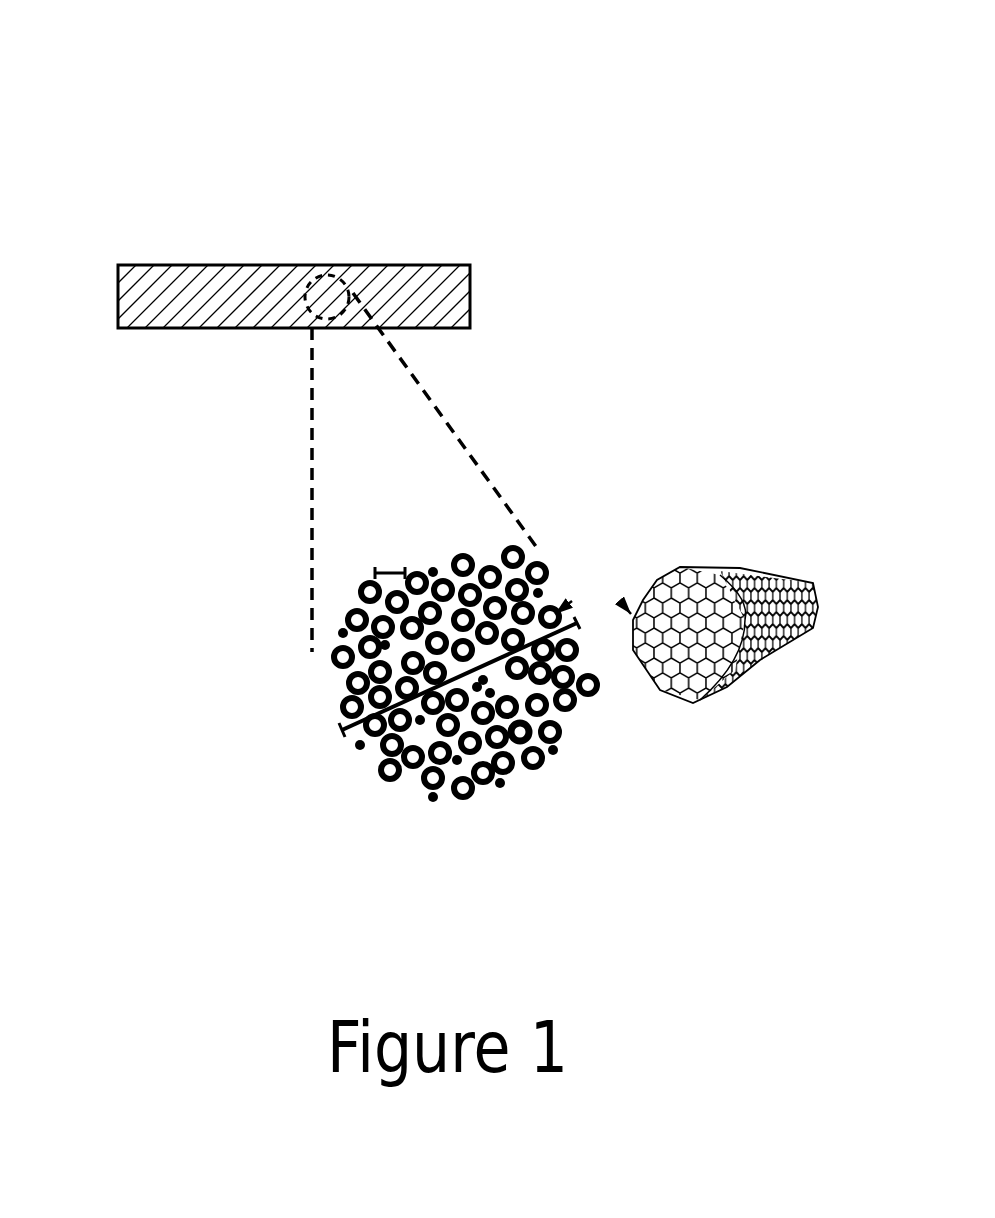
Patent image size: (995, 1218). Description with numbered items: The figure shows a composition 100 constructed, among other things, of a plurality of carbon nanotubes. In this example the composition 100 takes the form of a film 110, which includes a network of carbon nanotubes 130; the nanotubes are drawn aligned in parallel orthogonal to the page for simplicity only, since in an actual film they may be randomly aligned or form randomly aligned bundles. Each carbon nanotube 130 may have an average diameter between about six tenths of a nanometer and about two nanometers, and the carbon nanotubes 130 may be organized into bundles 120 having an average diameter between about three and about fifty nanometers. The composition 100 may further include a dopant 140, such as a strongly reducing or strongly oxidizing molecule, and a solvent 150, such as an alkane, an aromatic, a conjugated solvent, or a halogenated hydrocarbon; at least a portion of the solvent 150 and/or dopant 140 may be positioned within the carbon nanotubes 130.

The composition 100 is at (652, 203).
The film 110 is at (232, 291).
The bundle of carbon nanotubes 120 is at (316, 729).
The carbon nanotube 130 is at (723, 567).
The dopant 140 is at (500, 783).
The solvent 150 is at (533, 727).